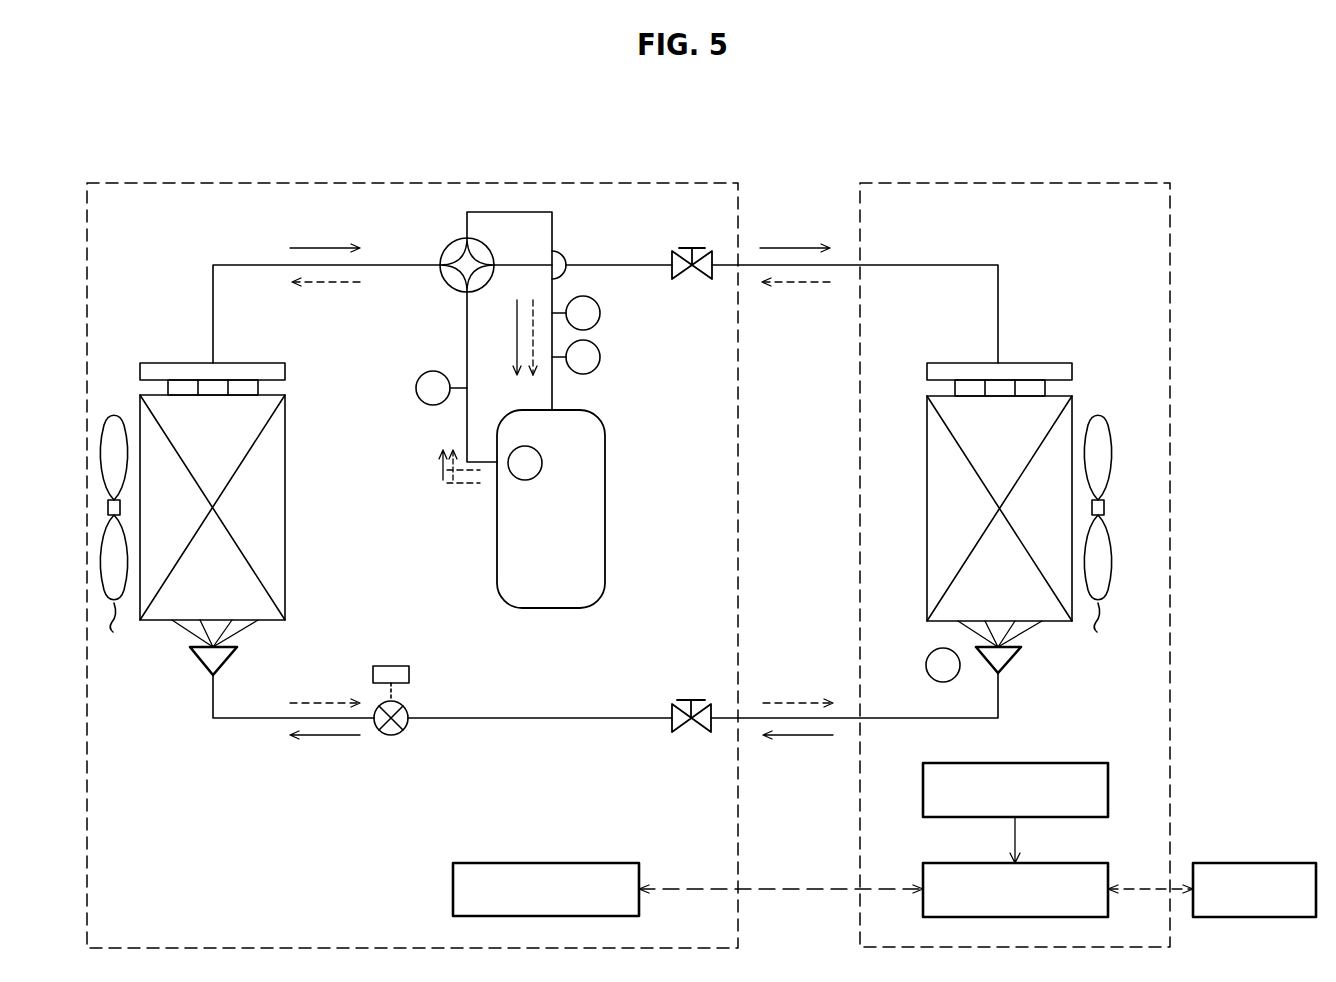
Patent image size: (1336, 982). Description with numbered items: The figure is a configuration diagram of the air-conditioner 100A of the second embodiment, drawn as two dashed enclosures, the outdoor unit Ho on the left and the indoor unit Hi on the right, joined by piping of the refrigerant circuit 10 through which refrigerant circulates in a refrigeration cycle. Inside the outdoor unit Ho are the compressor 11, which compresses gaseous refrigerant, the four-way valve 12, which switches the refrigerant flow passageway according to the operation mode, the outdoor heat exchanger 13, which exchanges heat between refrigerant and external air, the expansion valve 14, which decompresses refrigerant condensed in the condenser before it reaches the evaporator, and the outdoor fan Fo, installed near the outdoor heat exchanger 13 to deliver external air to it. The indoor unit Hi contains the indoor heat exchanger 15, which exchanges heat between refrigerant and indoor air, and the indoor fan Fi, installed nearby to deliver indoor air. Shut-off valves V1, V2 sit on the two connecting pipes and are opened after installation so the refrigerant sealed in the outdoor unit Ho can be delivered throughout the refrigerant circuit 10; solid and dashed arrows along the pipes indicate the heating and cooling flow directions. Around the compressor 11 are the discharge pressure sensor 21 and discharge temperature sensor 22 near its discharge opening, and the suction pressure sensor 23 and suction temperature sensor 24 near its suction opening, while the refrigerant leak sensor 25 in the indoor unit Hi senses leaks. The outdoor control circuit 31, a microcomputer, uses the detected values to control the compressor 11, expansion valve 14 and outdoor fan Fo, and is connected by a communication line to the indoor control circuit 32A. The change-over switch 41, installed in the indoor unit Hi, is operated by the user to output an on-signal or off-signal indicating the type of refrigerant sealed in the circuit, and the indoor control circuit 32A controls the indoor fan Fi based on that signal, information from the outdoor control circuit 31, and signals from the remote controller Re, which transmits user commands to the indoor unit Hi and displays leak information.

The air-conditioner 100A is at (813, 156).
The outdoor unit Ho is at (150, 183).
The indoor unit Hi is at (923, 183).
The refrigerant circuit 10 is at (237, 722).
The compressor 11 is at (605, 507).
The four-way valve 12 is at (448, 250).
The outdoor heat exchanger 13 is at (285, 507).
The expansion valve 14 is at (391, 666).
The indoor heat exchanger 15 is at (927, 583).
The discharge pressure sensor 21 is at (422, 378).
The discharge temperature sensor 22 is at (530, 480).
The suction pressure sensor 23 is at (600, 357).
The suction temperature sensor 24 is at (600, 313).
The refrigerant leak sensor 25 is at (926, 662).
The outdoor control circuit 31 is at (545, 863).
The indoor control circuit 32A is at (1048, 863).
The change-over switch 41 is at (1048, 763).
The shut-off valve V1 is at (680, 251).
The shut-off valve V2 is at (691, 700).
The outdoor fan Fo is at (114, 539).
The indoor fan Fi is at (1097, 539).
The remote controller Re is at (1255, 863).